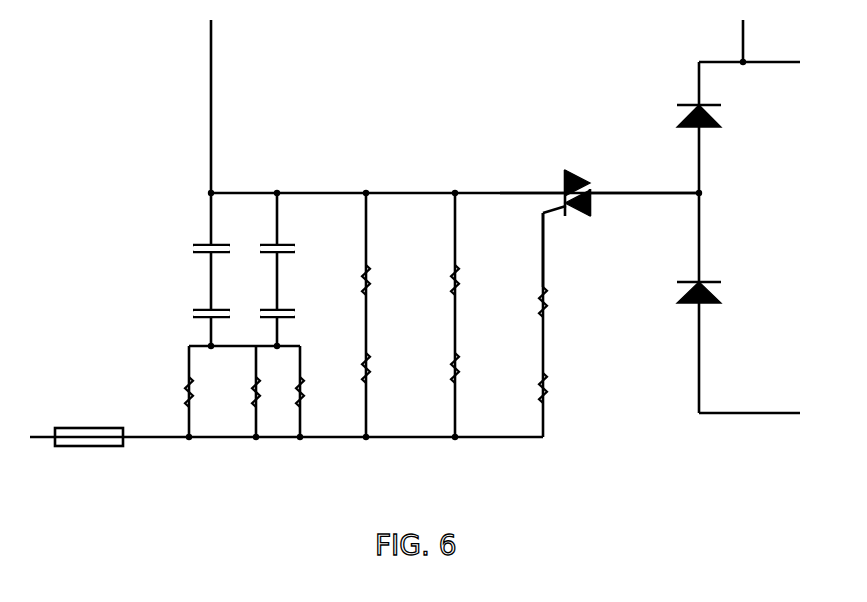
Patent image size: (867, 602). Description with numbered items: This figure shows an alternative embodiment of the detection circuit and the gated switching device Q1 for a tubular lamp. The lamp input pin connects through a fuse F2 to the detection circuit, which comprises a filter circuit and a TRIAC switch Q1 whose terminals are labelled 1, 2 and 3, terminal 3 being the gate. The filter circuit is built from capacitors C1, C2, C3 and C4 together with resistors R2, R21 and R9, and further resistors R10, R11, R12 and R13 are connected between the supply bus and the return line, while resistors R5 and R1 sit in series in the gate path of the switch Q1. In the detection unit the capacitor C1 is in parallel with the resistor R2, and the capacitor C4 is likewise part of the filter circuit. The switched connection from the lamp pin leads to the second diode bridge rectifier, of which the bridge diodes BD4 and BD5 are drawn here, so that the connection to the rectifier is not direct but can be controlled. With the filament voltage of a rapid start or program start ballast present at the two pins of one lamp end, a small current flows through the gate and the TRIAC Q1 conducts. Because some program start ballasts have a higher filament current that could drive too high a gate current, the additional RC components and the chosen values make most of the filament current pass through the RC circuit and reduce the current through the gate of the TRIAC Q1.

The fuse F2 is at (89, 428).
The capacitor C1 is at (221, 238).
The capacitor 1uF C2 is at (221, 290).
The capacitor 1uF C3 is at (287, 226).
The capacitor C4 is at (287, 290).
The resistor R2 is at (215, 404).
The resistor 1R2 R21 is at (273, 404).
The resistor 1R2 R9 is at (317, 404).
The resistor 150 R10 is at (383, 292).
The resistor 150 R11 is at (472, 292).
The resistor 150 R12 is at (383, 379).
The resistor 150 R13 is at (472, 379).
The resistor 68 R5 is at (562, 312).
The resistor 68 R1 is at (562, 400).
The gated switching device Q1 is at (588, 225).
The triac terminal 1 is at (532, 184).
The triac terminal 2 is at (644, 184).
The triac gate terminal 3 is at (529, 250).
The bridge diode BD4 is at (720, 125).
The bridge diode BD5 is at (720, 303).